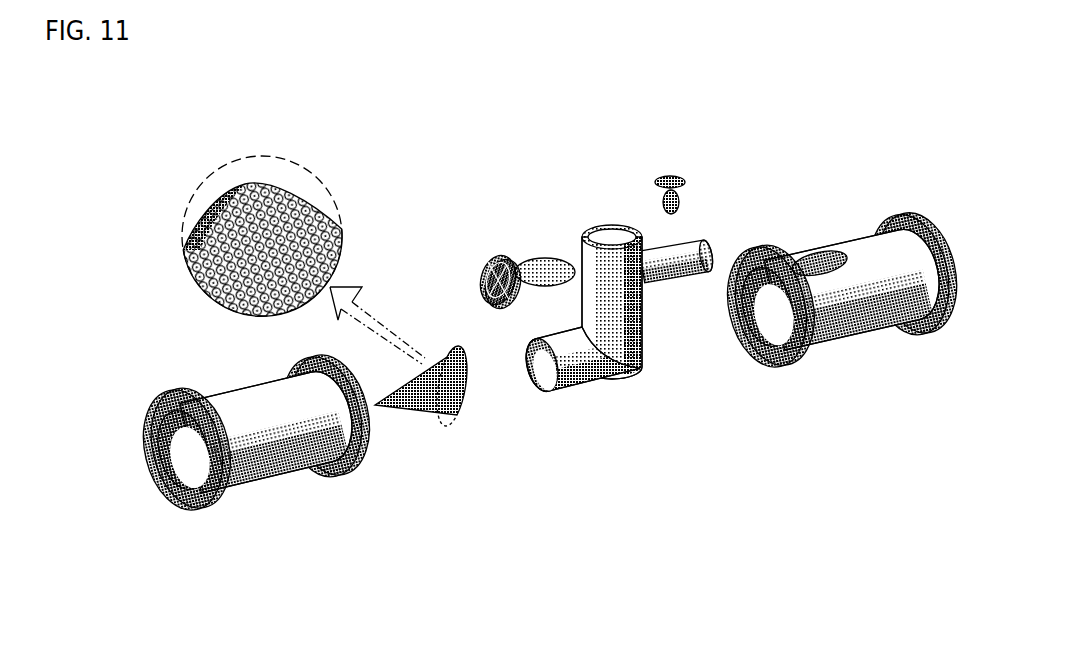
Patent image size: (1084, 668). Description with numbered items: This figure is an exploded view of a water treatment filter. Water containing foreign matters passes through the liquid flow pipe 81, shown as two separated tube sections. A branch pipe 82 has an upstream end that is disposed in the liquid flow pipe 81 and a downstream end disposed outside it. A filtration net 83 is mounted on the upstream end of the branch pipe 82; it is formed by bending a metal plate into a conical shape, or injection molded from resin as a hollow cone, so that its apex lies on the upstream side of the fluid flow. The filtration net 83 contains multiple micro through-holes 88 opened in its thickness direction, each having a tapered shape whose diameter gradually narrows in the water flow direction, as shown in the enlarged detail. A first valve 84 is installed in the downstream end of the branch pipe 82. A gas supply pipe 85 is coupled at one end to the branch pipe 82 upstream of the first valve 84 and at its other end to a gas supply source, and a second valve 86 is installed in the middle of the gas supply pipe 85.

The liquid flow pipe 81 is at (266, 482).
The branch pipe 82 is at (603, 378).
The filtration net 83 is at (457, 416).
The first valve 84 is at (497, 258).
The gas supply pipe 85 is at (672, 284).
The second valve 86 is at (664, 176).
The micro through-hole 88 is at (283, 195).